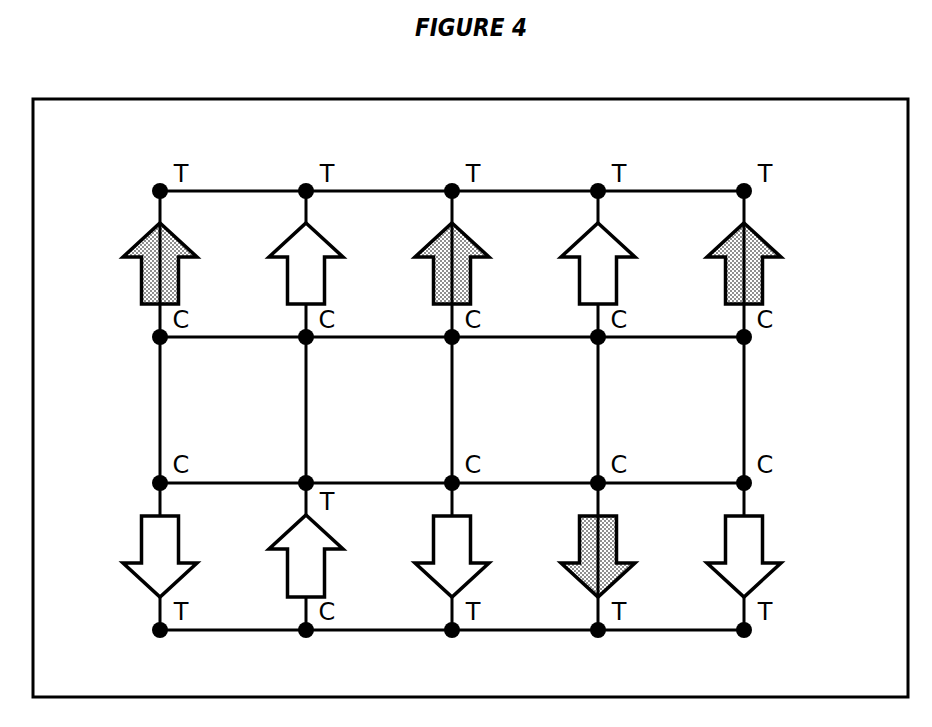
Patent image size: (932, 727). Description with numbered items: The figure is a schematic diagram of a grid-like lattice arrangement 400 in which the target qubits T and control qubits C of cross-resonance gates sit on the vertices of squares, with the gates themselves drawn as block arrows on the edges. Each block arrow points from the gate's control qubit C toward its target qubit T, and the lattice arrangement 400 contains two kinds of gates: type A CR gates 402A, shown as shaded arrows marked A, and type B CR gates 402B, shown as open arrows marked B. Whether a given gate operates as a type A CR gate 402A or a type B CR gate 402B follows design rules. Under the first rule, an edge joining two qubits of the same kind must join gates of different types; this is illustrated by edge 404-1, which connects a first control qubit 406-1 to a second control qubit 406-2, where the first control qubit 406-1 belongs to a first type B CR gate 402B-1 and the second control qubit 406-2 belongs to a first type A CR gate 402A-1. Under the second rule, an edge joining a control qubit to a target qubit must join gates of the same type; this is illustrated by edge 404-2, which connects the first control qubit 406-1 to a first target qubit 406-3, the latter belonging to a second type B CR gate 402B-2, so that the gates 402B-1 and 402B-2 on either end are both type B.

The grid-like lattice arrangement 400 is at (93, 136).
The type A CR gate 402A is at (237, 280).
The type B CR gate 402B is at (383, 280).
The first type A CR gate 402A-1 is at (545, 280).
The first type B CR gate 402B-1 is at (543, 533).
The second type B CR gate 402B-2 is at (400, 573).
The edge 404-1 is at (515, 413).
The edge 404-2 is at (596, 483).
The first control qubit 406-1 is at (450, 481).
The second control qubit 406-2 is at (447, 343).
The first target qubit 406-3 is at (303, 481).